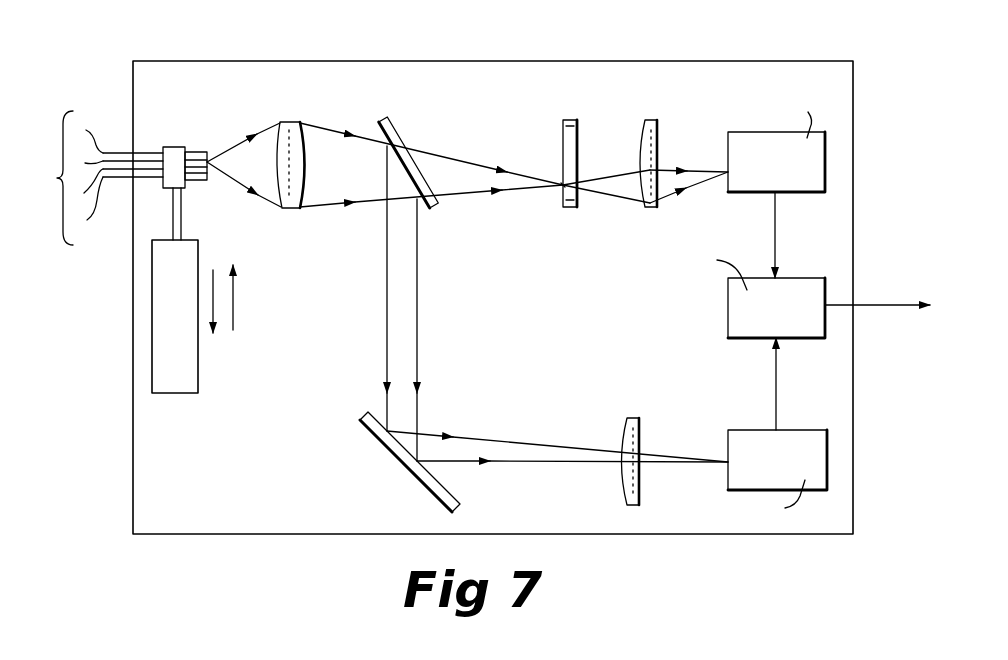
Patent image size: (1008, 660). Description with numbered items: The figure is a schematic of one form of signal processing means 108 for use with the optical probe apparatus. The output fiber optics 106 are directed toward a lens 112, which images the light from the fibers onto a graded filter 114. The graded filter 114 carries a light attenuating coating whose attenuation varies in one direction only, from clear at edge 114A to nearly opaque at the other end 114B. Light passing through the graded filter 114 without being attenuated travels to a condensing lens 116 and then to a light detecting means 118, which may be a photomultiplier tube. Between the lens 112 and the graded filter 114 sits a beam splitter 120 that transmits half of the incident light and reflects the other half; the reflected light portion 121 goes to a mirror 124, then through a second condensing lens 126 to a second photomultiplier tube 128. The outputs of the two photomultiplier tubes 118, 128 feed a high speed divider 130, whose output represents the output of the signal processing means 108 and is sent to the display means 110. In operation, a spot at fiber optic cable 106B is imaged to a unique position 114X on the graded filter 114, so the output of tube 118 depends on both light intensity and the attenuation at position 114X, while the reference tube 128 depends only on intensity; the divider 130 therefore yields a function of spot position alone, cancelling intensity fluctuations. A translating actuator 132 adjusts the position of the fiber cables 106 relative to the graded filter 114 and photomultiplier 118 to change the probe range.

The output fiber optics 106 is at (92, 178).
The fiber optic cable 106B is at (245, 145).
The signal processing means 108 is at (655, 46).
The display means 110 is at (877, 270).
The lens 112 is at (288, 122).
The graded filter 114 is at (562, 192).
The edge 114A is at (568, 208).
The other end 114B is at (570, 120).
The unique position 114X is at (562, 183).
The condensing lens 116 is at (660, 132).
The light detecting means 118 is at (788, 171).
The beam splitter 120 is at (394, 130).
The reflected light portion 121 is at (418, 318).
The mirror 124 is at (393, 456).
The second condensing lens 126 is at (642, 428).
The second photomultiplier tube 128 is at (795, 475).
The high speed divider 130 is at (795, 318).
The translating actuator 132 is at (190, 327).